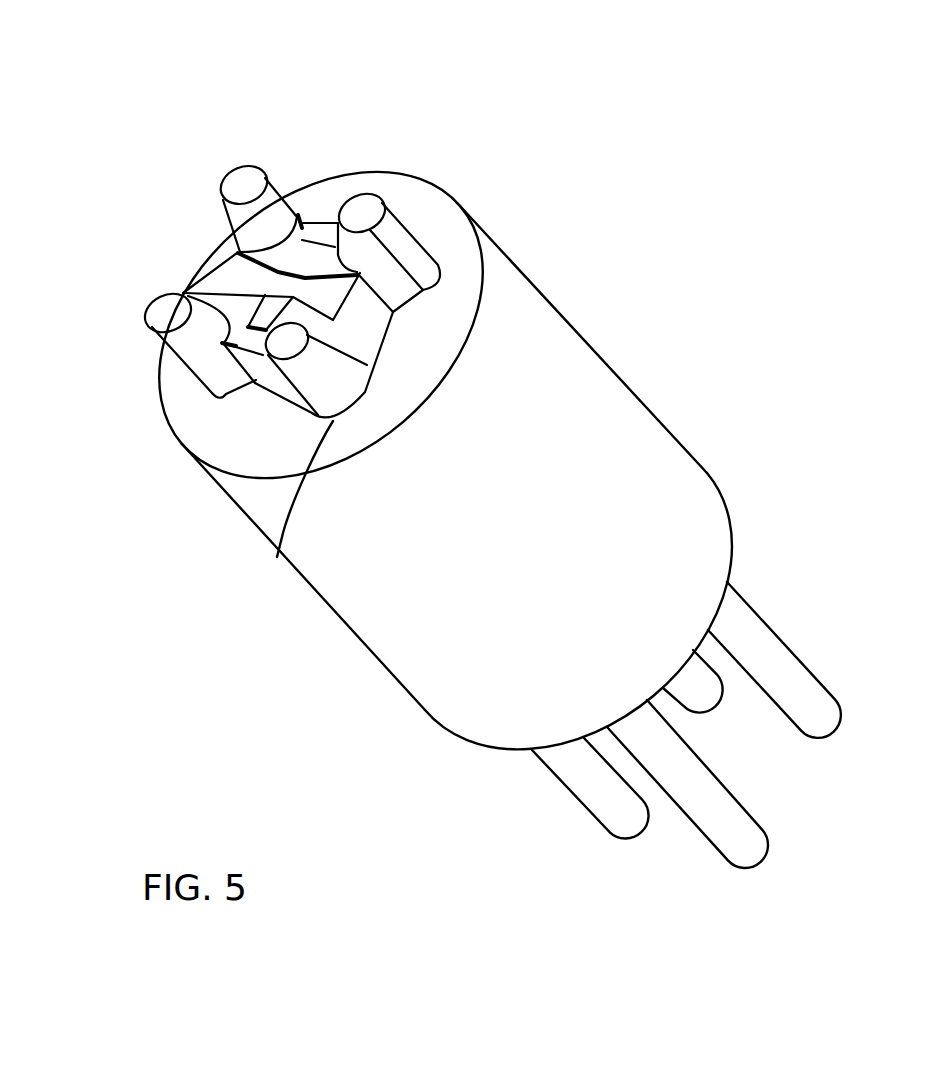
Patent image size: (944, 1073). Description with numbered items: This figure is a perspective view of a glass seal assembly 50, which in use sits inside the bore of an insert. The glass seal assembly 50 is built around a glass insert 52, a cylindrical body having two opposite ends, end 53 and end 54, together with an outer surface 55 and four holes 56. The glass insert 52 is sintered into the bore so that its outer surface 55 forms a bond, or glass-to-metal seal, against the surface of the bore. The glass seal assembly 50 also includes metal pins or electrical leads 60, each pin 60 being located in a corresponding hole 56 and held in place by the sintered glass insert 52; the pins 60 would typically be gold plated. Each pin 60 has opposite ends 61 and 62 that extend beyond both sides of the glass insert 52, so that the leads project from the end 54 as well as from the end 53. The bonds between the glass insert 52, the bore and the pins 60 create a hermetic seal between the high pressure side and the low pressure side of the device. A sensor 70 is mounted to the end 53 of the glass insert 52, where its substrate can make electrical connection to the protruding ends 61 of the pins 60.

The glass seal assembly 50 is at (210, 110).
The glass insert 52 is at (607, 367).
The end 53 is at (193, 433).
The end 54 is at (717, 568).
The outer surface 55 is at (380, 613).
The hole 56 is at (277, 557).
The metal pin 60 is at (535, 773).
The end 61 is at (145, 315).
The end 62 is at (619, 835).
The sensor 70 is at (212, 267).